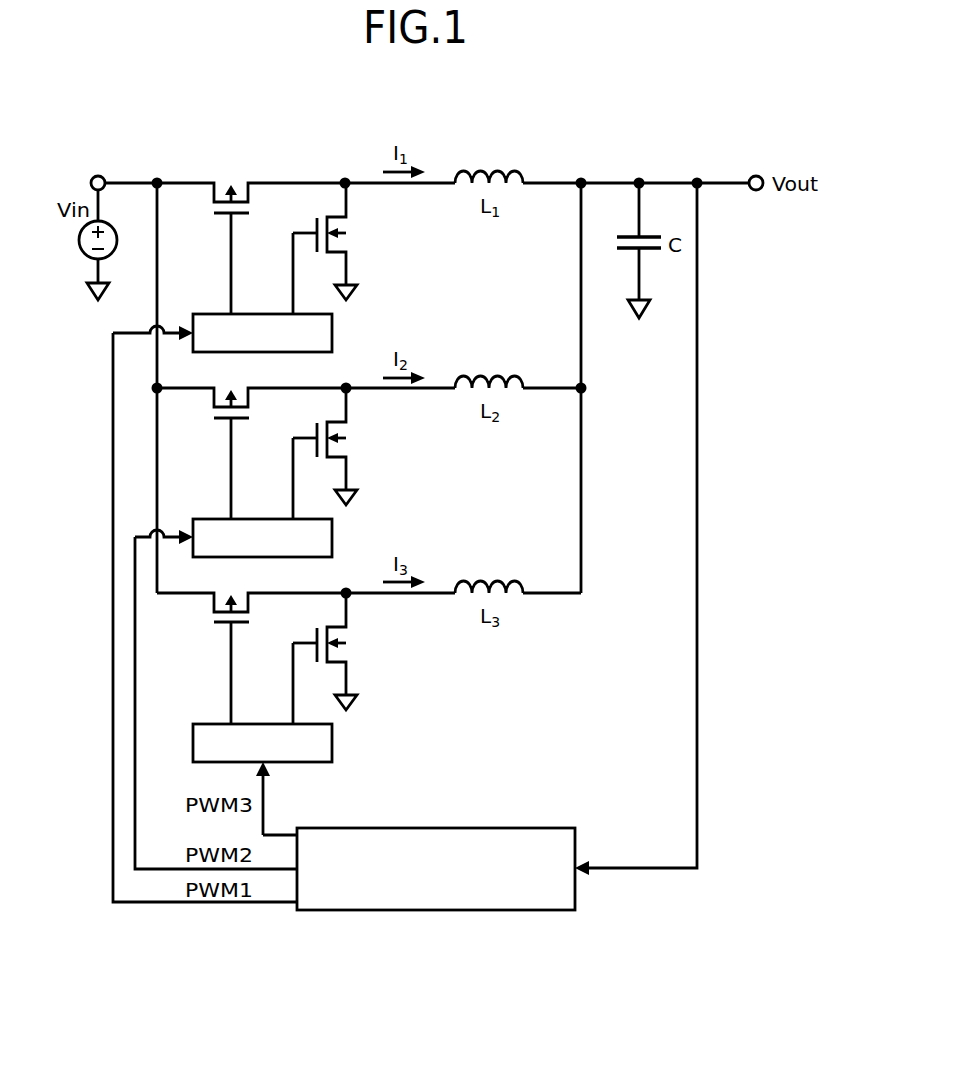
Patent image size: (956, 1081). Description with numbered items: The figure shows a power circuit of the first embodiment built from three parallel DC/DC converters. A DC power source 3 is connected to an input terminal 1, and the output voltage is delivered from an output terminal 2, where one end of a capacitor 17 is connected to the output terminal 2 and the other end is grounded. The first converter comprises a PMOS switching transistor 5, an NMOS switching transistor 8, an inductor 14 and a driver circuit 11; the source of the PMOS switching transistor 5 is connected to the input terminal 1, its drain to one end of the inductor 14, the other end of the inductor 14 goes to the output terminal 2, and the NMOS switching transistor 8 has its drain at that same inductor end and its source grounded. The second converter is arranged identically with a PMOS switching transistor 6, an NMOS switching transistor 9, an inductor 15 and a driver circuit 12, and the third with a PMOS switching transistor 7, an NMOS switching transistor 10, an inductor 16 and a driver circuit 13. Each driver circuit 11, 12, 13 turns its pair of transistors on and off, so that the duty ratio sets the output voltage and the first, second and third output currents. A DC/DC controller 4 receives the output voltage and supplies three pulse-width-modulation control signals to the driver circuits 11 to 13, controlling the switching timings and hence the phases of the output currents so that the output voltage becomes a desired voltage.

The input terminal 1 is at (98, 175).
The output terminal 2 is at (756, 175).
The DC power source 3 is at (79, 241).
The DC/DC controller 4 is at (576, 893).
The PMOS switching transistor 5 is at (222, 216).
The PMOS switching transistor 6 is at (222, 421).
The PMOS switching transistor 7 is at (222, 626).
The NMOS switching transistor 8 is at (315, 225).
The NMOS switching transistor 9 is at (315, 431).
The NMOS switching transistor 10 is at (315, 634).
The driver circuit 11 is at (333, 323).
The driver circuit 12 is at (333, 527).
The driver circuit 13 is at (333, 742).
The inductor 14 is at (497, 170).
The inductor 15 is at (498, 374).
The inductor 16 is at (498, 579).
The capacitor 17 is at (651, 252).